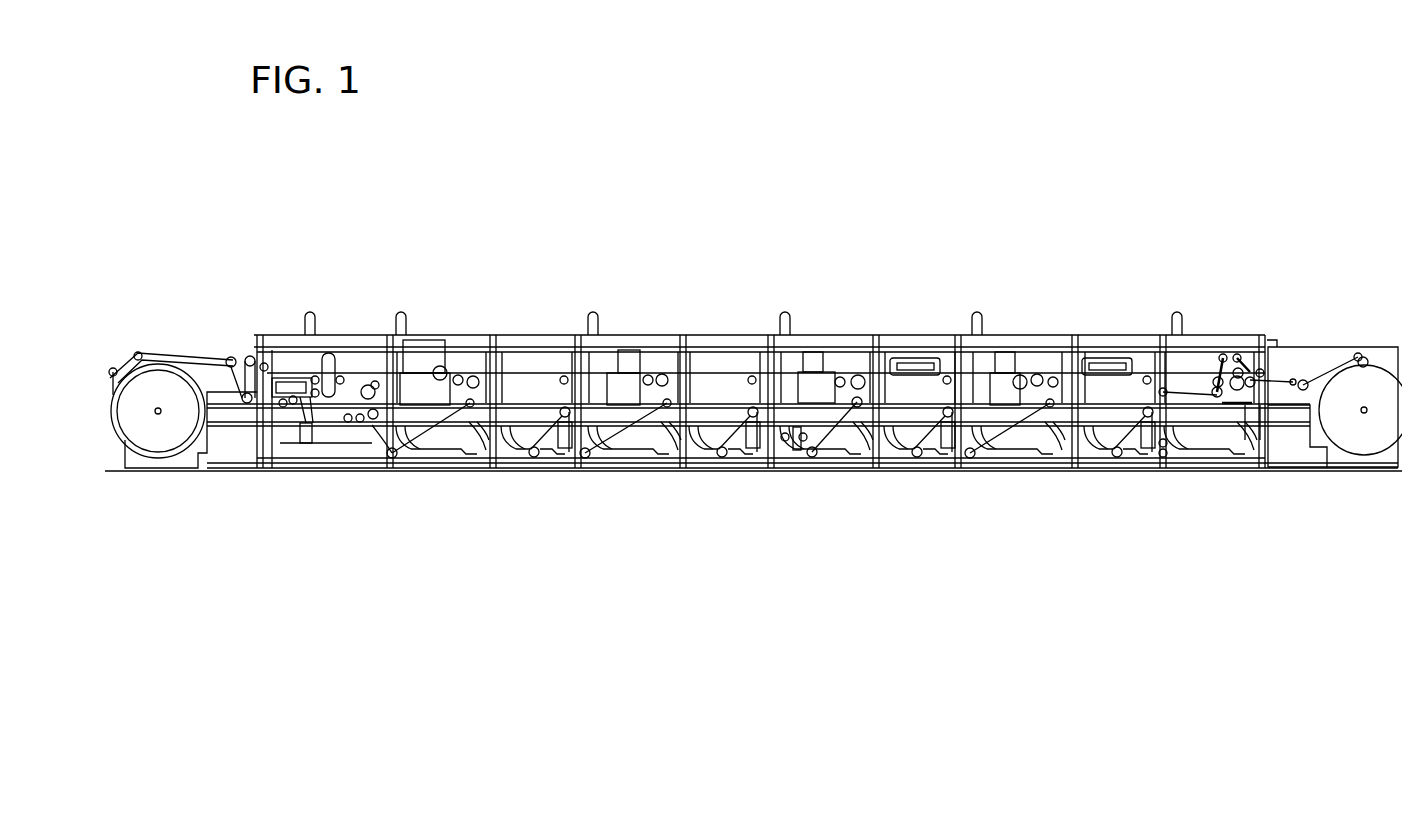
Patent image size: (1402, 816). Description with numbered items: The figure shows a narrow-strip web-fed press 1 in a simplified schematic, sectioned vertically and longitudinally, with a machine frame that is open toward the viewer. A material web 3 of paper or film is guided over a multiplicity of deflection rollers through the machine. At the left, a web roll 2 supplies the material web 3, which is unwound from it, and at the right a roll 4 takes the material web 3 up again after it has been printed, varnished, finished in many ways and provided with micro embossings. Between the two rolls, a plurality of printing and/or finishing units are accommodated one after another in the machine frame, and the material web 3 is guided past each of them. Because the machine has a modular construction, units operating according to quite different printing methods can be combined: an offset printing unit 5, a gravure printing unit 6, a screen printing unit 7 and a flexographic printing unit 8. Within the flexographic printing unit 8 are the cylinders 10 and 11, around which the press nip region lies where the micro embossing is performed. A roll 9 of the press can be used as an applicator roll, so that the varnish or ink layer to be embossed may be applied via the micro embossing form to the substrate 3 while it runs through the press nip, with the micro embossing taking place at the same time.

The narrow-strip web-fed press 1 is at (888, 248).
The web roll 2 is at (158, 384).
The material web 3 is at (212, 357).
The roll 4 is at (1372, 397).
The offset printing unit 5 is at (425, 356).
The gravure printing unit 6 is at (627, 388).
The screen printing unit 7 is at (812, 388).
The flexographic printing unit 8 is at (1002, 388).
The roll 9 is at (1020, 380).
The cylinder 10 is at (1035, 380).
The cylinder 11 is at (1052, 382).